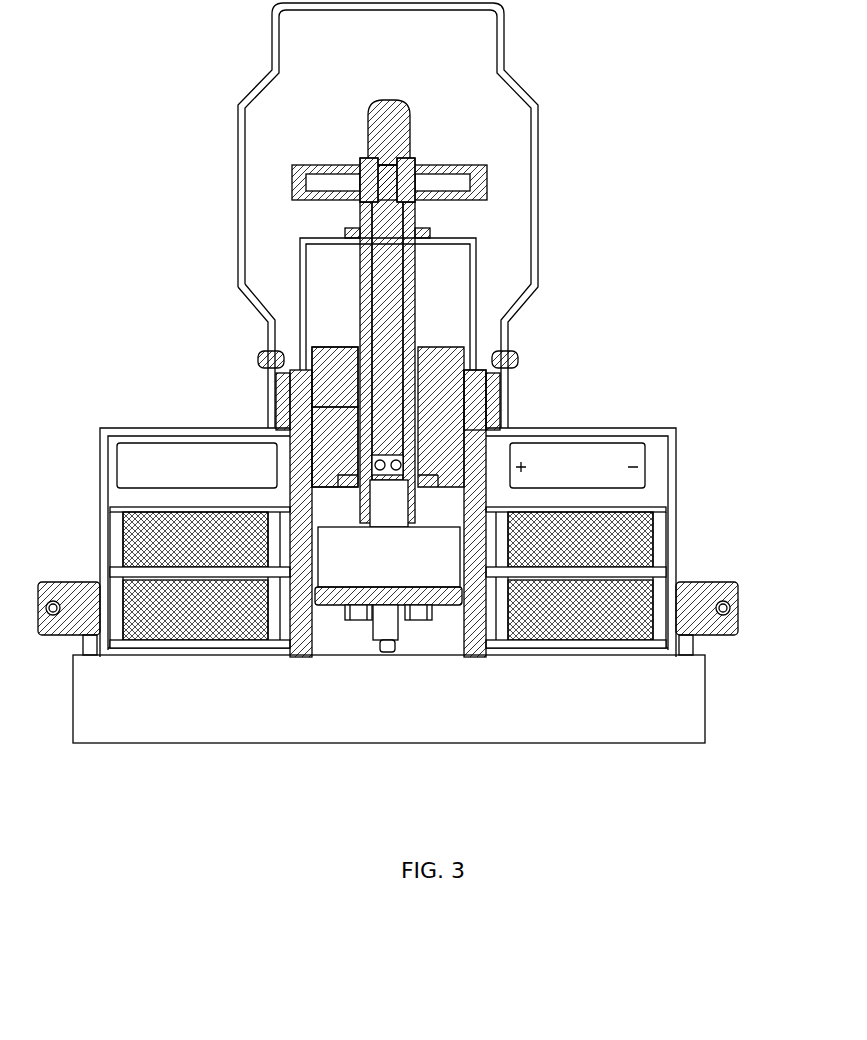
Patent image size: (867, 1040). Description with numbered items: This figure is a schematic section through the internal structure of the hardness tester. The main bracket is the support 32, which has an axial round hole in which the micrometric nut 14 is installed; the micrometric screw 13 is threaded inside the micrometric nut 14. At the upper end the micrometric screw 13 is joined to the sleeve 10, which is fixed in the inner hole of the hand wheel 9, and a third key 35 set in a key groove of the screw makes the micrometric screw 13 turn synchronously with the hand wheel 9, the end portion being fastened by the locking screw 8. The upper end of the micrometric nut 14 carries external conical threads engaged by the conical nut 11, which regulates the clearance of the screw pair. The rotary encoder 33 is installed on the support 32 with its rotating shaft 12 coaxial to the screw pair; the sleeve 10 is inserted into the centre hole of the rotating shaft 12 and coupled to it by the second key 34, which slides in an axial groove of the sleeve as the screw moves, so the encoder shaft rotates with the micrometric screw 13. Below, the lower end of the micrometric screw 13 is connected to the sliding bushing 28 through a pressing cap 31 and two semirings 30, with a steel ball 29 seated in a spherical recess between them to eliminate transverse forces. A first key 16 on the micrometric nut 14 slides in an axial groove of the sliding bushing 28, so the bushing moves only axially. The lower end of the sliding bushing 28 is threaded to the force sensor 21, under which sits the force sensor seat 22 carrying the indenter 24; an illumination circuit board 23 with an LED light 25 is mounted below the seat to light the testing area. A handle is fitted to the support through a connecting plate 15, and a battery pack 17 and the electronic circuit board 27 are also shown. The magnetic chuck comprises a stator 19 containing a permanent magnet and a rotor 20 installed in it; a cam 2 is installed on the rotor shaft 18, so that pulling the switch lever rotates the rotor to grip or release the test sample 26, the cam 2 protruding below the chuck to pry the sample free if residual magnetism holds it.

The cam 2 is at (92, 648).
The locking screw 8 is at (400, 150).
The hand wheel 9 is at (475, 178).
The sleeve 10 is at (418, 225).
The conical nut 11 is at (430, 302).
The rotating shaft of the rotary encoder 12 is at (448, 337).
The micrometric screw 13 is at (482, 422).
The micrometric nut 14 is at (510, 356).
The connecting plate 15 is at (505, 410).
The first key 16 is at (432, 462).
The battery pack 17 is at (612, 468).
The rotor shaft 18 is at (677, 612).
The stator 19 is at (578, 538).
The rotor 20 is at (540, 612).
The force sensor 21 is at (465, 605).
The force sensor seat 22 is at (437, 605).
The illumination circuit board 23 is at (390, 628).
The indenter 24 is at (405, 612).
The LED light 25 is at (362, 612).
The test sample 26 is at (207, 705).
The electronic circuit board 27 is at (207, 465).
The sliding bushing 28 is at (270, 432).
The steel ball 29 is at (300, 445).
The semiring 30 is at (345, 475).
The pressing cap 31 is at (322, 418).
The support 32 is at (330, 368).
The rotary encoder 33 is at (332, 275).
The second key 34 is at (348, 230).
The third key 35 is at (358, 163).